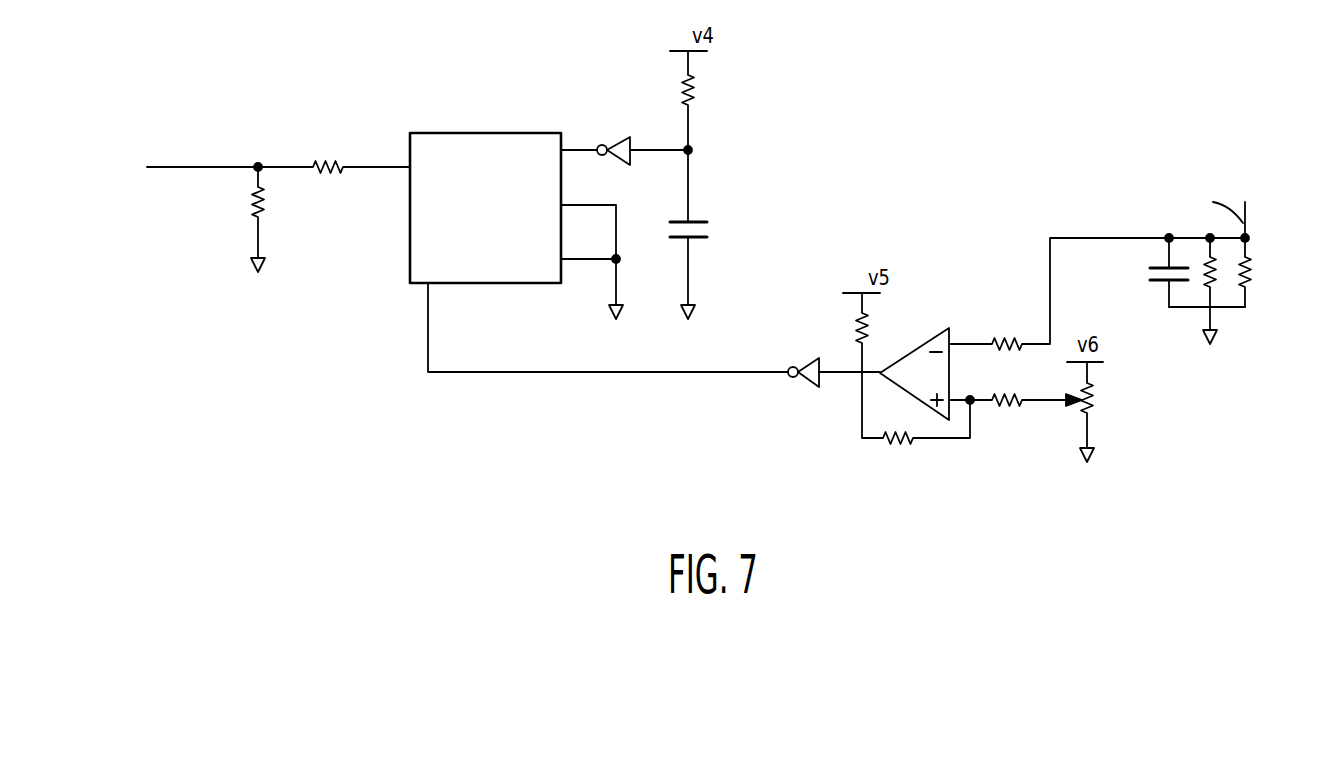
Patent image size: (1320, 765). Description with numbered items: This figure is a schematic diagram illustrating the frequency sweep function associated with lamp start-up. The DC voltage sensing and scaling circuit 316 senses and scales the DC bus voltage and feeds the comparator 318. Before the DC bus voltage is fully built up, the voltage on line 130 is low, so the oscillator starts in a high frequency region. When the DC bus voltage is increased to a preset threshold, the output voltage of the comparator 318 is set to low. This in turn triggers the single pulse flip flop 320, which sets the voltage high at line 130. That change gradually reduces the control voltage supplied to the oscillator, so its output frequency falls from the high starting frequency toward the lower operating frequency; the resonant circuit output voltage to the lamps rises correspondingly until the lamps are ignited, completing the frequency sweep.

The line 130 is at (198, 167).
The single pulse flip flop 320 is at (442, 130).
The comparator 318 is at (932, 330).
The DC voltage sensing and scaling circuit 316 is at (1248, 322).